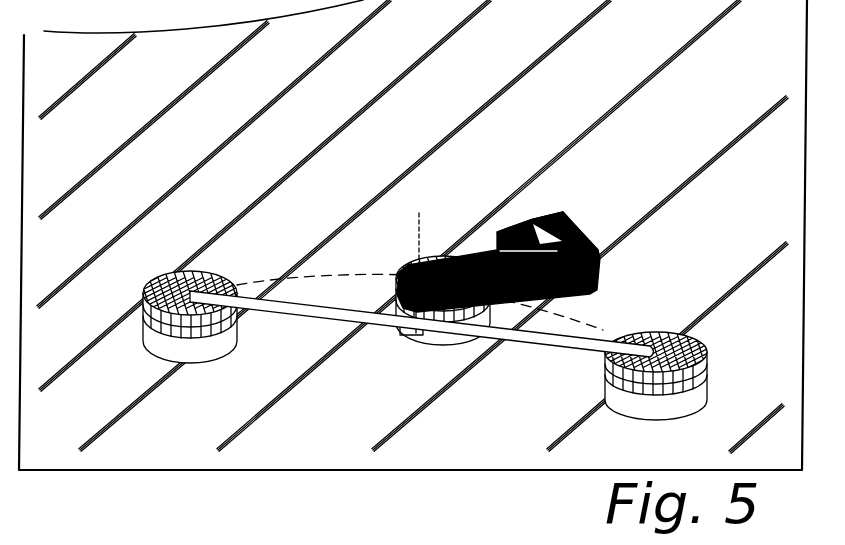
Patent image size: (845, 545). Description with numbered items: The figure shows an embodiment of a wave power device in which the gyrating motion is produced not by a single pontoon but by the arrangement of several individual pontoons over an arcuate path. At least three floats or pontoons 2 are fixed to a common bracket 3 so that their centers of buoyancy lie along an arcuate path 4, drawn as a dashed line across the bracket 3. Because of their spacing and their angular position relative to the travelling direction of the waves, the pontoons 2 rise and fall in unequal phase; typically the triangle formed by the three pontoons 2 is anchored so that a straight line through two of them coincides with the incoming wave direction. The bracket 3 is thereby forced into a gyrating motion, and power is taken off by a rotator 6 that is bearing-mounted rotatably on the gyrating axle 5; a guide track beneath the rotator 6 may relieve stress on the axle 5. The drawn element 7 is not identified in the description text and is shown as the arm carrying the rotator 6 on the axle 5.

The floats or pontoons 2 is at (157, 350).
The bracket 3 is at (313, 312).
The arcuate path 4 is at (347, 275).
The gyrating axle 5 is at (421, 262).
The rotator 6 is at (573, 222).
The lever arm 7 is at (480, 262).